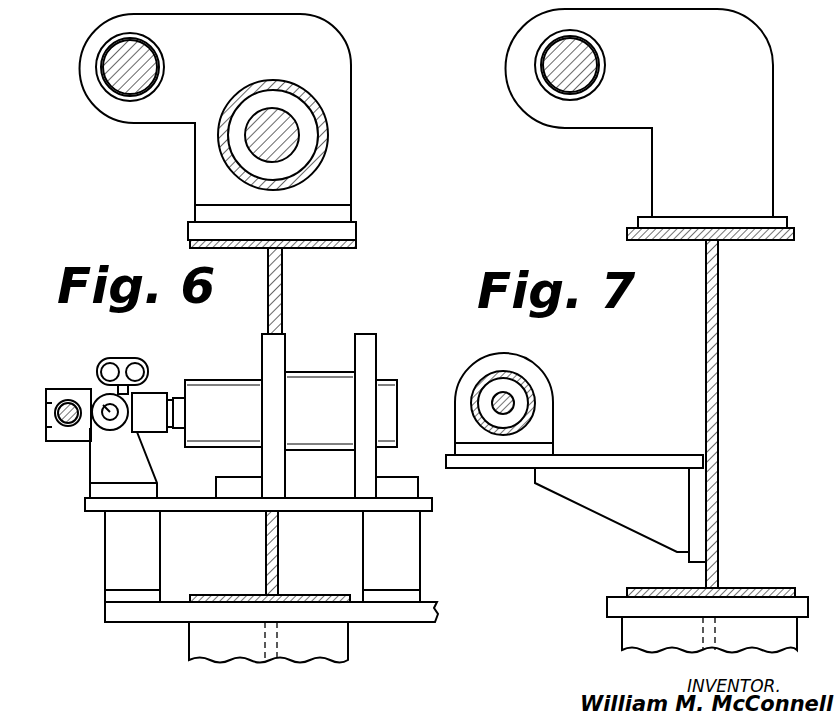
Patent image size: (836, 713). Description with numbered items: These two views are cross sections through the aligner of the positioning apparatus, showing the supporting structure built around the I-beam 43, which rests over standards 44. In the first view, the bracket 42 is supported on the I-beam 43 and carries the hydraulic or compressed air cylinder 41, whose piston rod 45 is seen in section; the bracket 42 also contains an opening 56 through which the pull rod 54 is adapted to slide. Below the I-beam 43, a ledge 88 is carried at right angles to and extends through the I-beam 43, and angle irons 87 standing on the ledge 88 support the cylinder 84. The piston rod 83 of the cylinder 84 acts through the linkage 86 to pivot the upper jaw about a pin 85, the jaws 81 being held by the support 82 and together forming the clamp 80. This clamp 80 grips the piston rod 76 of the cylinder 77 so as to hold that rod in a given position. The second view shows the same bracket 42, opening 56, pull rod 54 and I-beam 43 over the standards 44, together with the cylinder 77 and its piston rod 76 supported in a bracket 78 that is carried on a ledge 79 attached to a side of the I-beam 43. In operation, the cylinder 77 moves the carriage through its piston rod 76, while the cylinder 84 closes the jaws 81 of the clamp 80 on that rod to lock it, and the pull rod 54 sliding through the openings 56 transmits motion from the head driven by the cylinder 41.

In FIG. 6, the hydraulic or compressed air cylinder 41 is at (319, 109).
In FIG. 6, the brackets 42 is at (334, 50).
In FIG. 7, the brackets 42 is at (757, 43).
In FIG. 6, the I-beam 43 is at (292, 275).
In FIG. 7, the I-beam 43 is at (713, 297).
In FIG. 6, the standards 44 is at (342, 648).
In FIG. 7, the standards 44 is at (627, 643).
In FIG. 6, the piston rod 45 is at (296, 138).
In FIG. 6, the pull rod 54 is at (112, 63).
In FIG. 7, the pull rod 54 is at (563, 62).
In FIG. 6, the openings 56 is at (104, 46).
In FIG. 7, the openings 56 is at (541, 43).
In FIG. 6, the piston rod 76 is at (73, 425).
In FIG. 7, the piston rod 76 is at (515, 403).
In FIG. 7, the cylinder 77 is at (520, 378).
In FIG. 7, the brackets 78 is at (553, 425).
In FIG. 7, the ledges 79 is at (665, 440).
In FIG. 6, the clamp 80 is at (50, 392).
In FIG. 6, the jaws 81 is at (44, 428).
In FIG. 6, the support 82 is at (140, 470).
In FIG. 6, the piston rod 83 is at (150, 405).
In FIG. 6, the cylinder 84 is at (337, 378).
In FIG. 6, the pin 85 is at (102, 405).
In FIG. 6, the linkage 86 is at (141, 350).
In FIG. 6, the angle irons 87 is at (363, 458).
In FIG. 6, the ledge 88 is at (432, 502).